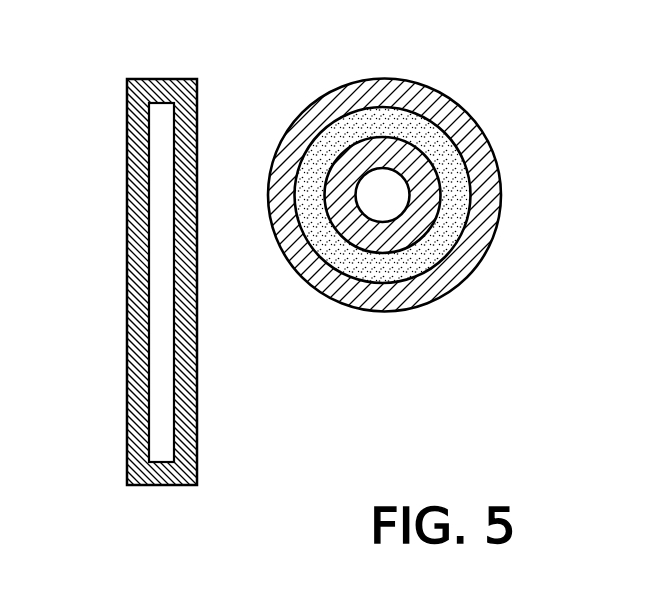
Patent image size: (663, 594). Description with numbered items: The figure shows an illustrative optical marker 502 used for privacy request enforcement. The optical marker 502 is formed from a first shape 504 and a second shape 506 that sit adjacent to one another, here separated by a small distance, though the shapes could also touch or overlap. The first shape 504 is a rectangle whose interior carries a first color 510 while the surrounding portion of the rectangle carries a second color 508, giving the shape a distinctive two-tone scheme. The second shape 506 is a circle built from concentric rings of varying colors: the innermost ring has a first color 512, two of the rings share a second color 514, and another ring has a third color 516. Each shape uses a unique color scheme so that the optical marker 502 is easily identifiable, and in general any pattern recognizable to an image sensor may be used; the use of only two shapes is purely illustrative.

The optical marker 502 is at (500, 57).
The first shape 504 is at (301, 315).
The second shape 506 is at (346, 226).
The second color 508 is at (133, 143).
The first color 510 is at (162, 205).
The first color 512 is at (459, 217).
The second color 514 is at (440, 177).
The third color 516 is at (432, 124).